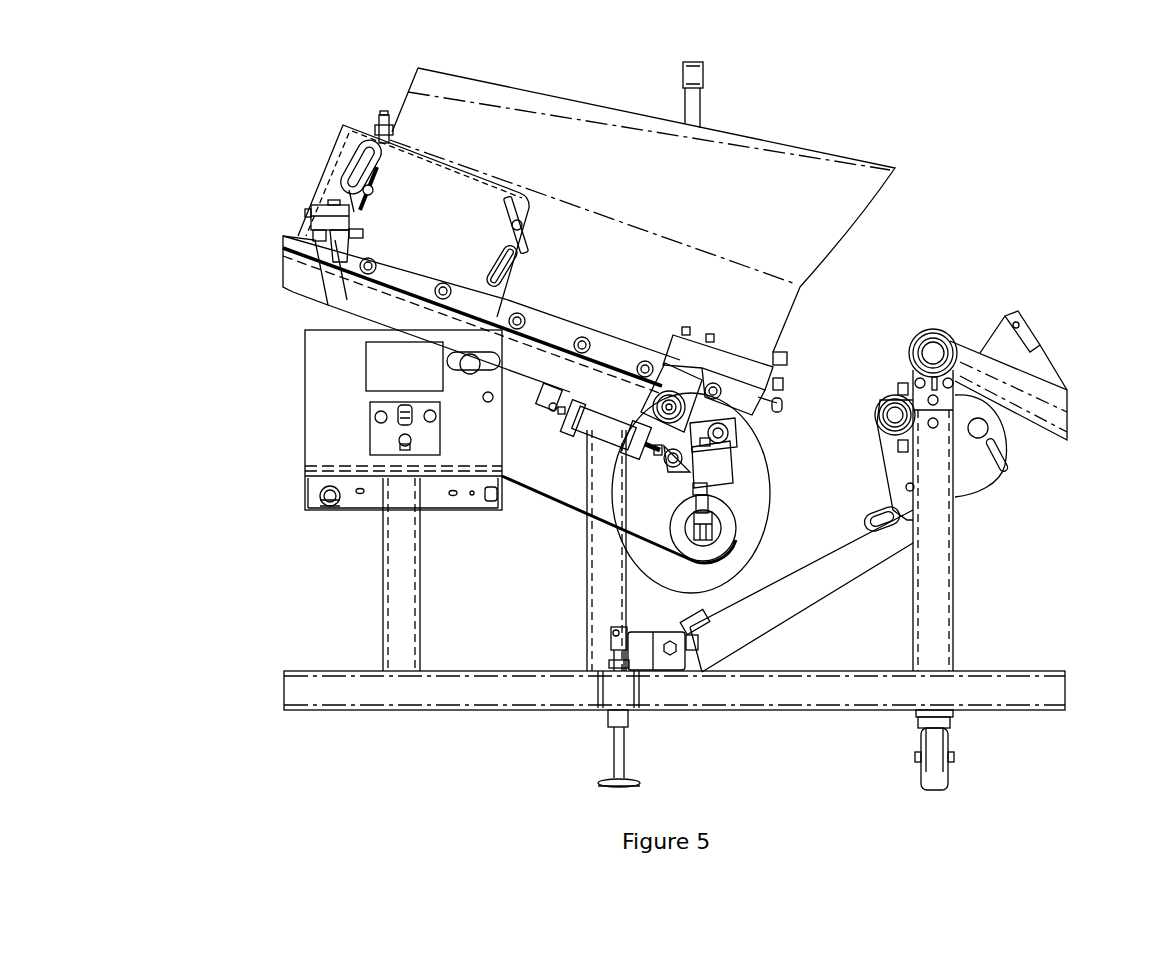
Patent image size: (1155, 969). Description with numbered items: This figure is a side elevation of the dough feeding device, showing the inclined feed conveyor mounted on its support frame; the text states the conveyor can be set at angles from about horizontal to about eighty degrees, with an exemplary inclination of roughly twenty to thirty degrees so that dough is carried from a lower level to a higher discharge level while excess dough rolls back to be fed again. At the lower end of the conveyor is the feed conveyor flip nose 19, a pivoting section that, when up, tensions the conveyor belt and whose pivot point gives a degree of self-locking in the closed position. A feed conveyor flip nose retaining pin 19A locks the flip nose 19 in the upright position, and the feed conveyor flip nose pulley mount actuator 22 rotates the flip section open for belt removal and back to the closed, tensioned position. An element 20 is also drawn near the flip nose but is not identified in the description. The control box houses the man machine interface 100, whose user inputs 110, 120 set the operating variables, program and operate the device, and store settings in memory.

The feed conveyor flip nose 19 is at (755, 545).
The feed conveyor flip nose retaining pin 19A is at (720, 433).
The sheave 20 is at (718, 552).
The feed conveyor flip nose pulley mount actuator 22 is at (599, 426).
The man machine interface 100 is at (386, 371).
The user input 110 is at (380, 418).
The user input 120 is at (404, 440).